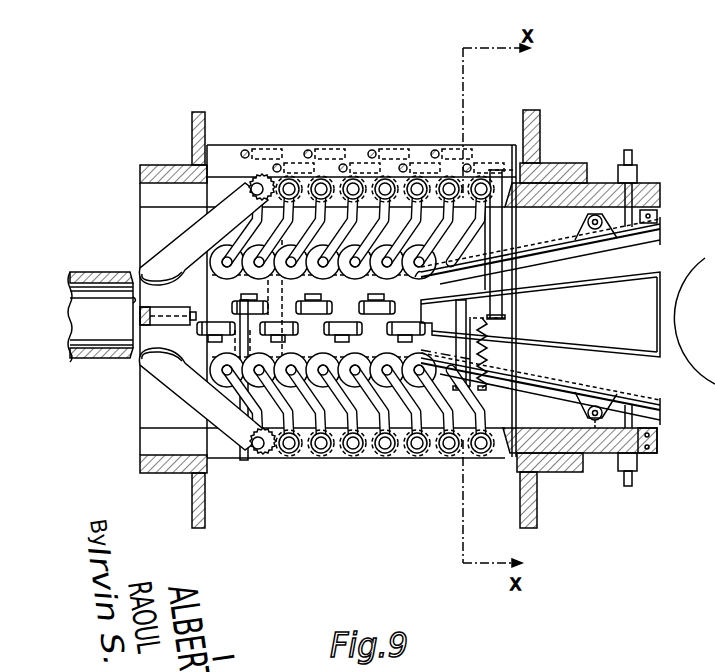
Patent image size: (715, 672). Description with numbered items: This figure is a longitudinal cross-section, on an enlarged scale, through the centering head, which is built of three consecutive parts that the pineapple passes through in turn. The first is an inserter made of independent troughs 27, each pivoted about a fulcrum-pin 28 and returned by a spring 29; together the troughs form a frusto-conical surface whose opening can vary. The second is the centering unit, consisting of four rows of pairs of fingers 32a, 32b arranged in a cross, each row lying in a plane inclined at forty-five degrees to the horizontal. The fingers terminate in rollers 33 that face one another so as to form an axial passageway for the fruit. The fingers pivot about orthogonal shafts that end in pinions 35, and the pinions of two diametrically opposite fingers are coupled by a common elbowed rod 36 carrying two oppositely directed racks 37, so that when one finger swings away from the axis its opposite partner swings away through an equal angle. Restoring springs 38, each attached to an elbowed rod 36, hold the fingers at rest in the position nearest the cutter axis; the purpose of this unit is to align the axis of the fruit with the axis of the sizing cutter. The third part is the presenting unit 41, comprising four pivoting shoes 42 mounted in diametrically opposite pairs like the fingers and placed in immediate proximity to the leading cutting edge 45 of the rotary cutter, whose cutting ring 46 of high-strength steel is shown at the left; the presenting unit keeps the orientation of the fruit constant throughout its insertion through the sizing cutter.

The independent troughs 27 is at (588, 183).
The fulcrum-pins 28 is at (658, 212).
The springs 29 is at (657, 452).
The fingers 32a is at (386, 258).
The fingers 32b is at (246, 294).
The rollers 33 is at (415, 290).
The pinions 35 is at (335, 150).
The elbowed rod 36 is at (528, 313).
The racks 37 is at (308, 150).
The restoring springs 38 is at (522, 367).
The presenting unit 41 is at (168, 165).
The pivoting shoes 42 is at (188, 245).
The leading cutting edge 45 is at (137, 305).
The cutting ring 46 is at (93, 272).